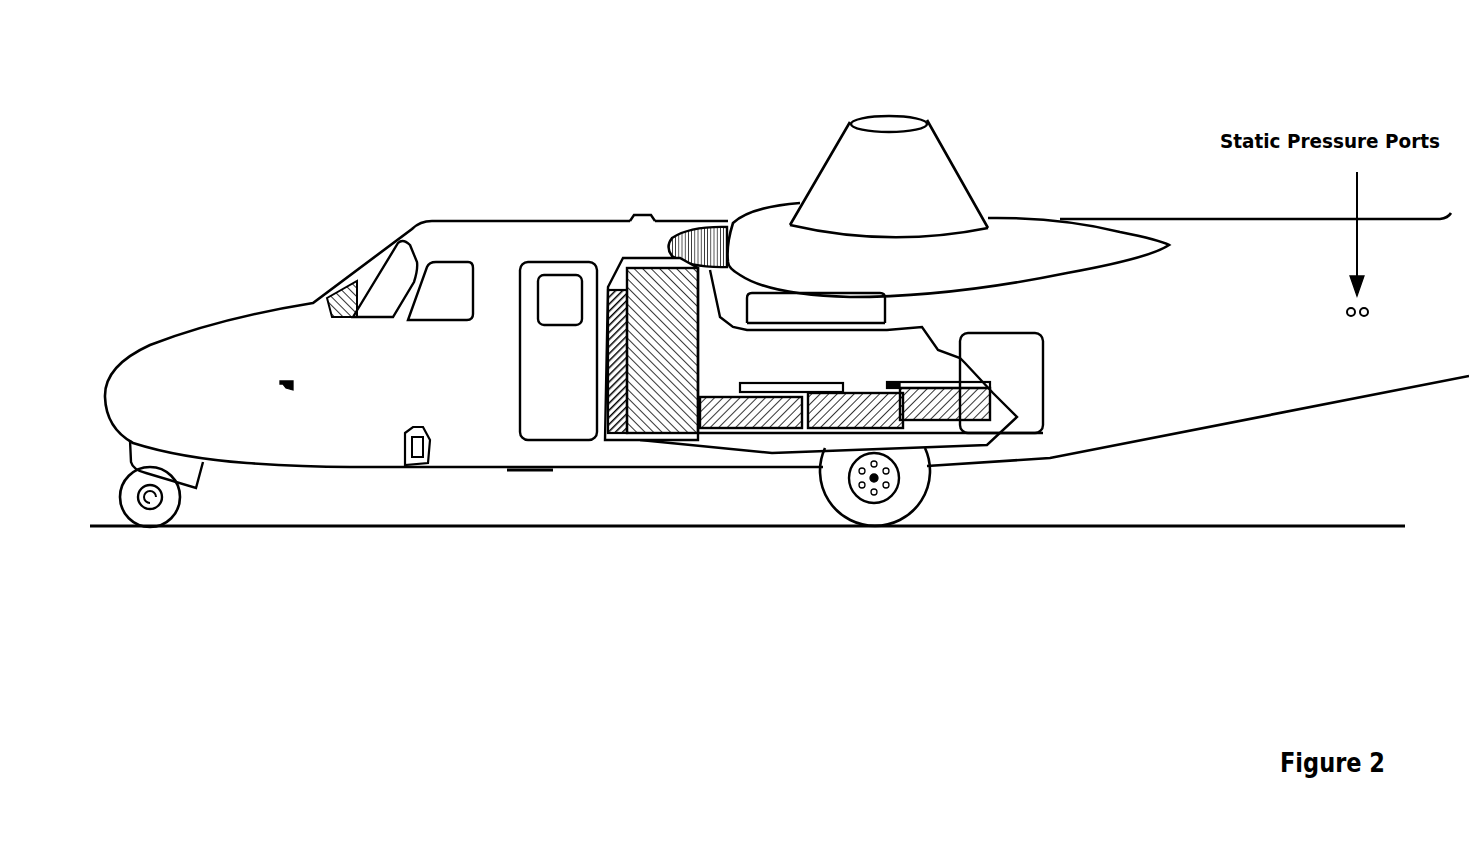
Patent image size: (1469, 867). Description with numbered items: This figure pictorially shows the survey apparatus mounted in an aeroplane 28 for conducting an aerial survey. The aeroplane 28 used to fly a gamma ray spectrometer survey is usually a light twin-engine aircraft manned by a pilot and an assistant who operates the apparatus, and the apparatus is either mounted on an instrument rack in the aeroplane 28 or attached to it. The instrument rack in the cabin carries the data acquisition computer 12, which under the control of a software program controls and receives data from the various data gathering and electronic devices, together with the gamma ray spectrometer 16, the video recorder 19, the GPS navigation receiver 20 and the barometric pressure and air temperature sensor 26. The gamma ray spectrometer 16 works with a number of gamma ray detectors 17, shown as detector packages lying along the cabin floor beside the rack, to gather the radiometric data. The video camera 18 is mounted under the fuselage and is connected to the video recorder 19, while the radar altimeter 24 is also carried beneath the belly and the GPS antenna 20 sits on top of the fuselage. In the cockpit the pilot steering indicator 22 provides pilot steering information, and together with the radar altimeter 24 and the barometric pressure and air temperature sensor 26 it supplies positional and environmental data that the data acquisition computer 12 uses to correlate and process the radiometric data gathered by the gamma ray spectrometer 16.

The aeroplane 28 is at (243, 333).
The pilot steering indicator 22 is at (345, 298).
The GPS navigation receiver and antenna 20 is at (658, 208).
The video camera 18 is at (408, 472).
The radar altimeter 24 is at (521, 474).
The gamma ray detectors 17 is at (868, 425).
The gamma ray spectrometer 16 is at (655, 393).
The data acquisition computer 12 is at (775, 507).
The video recorder 19 is at (775, 507).
The barometric pressure and air temperature sensor 26 is at (775, 507).